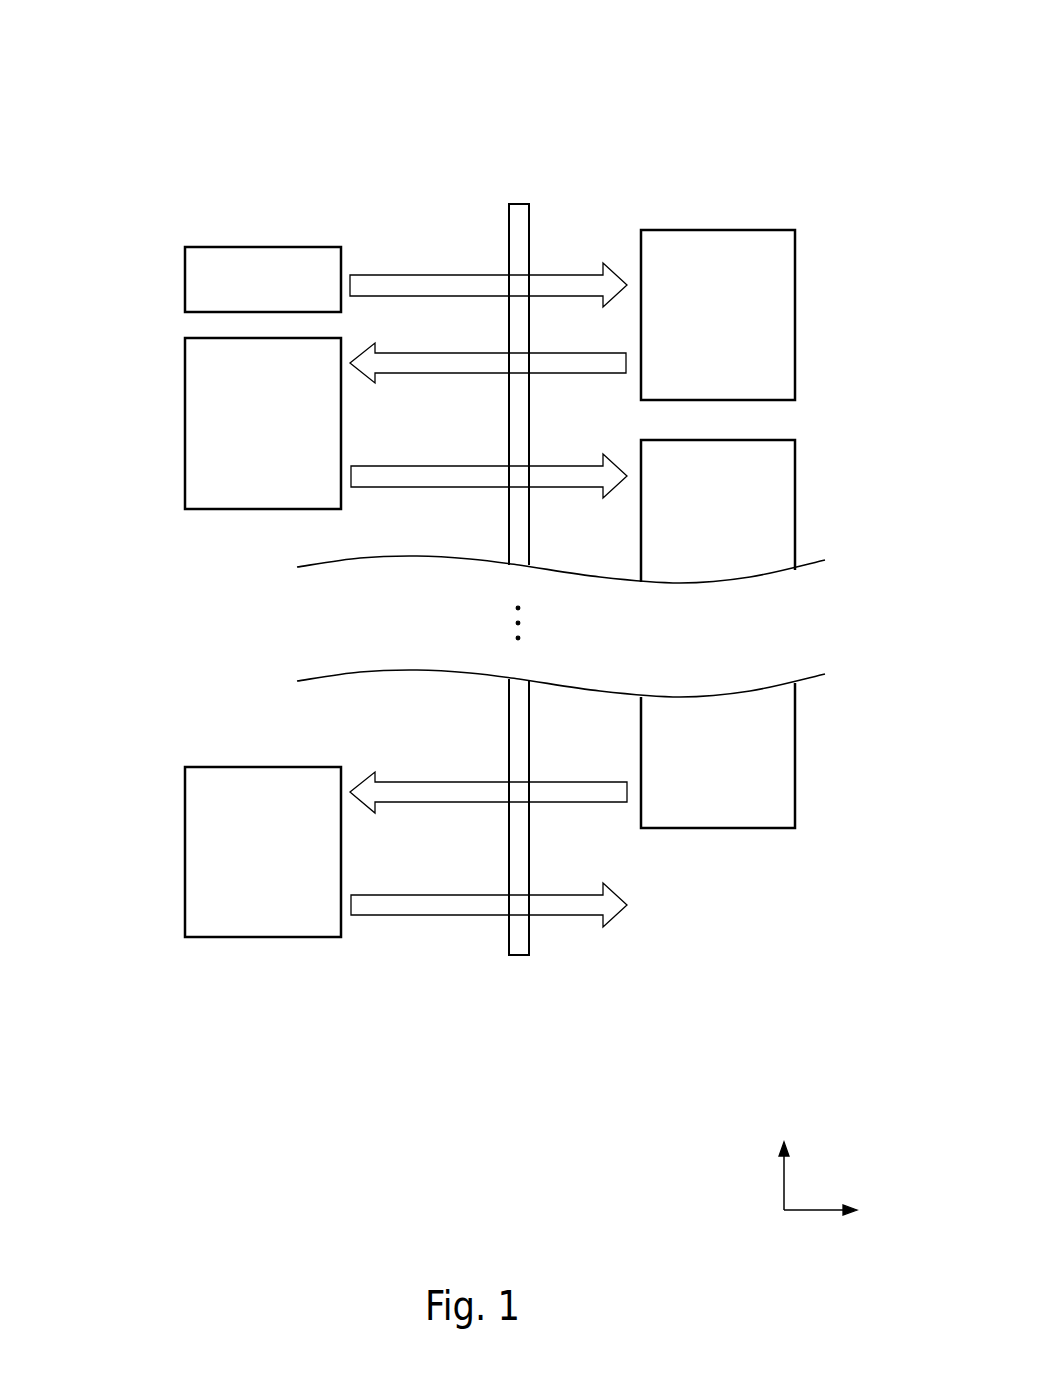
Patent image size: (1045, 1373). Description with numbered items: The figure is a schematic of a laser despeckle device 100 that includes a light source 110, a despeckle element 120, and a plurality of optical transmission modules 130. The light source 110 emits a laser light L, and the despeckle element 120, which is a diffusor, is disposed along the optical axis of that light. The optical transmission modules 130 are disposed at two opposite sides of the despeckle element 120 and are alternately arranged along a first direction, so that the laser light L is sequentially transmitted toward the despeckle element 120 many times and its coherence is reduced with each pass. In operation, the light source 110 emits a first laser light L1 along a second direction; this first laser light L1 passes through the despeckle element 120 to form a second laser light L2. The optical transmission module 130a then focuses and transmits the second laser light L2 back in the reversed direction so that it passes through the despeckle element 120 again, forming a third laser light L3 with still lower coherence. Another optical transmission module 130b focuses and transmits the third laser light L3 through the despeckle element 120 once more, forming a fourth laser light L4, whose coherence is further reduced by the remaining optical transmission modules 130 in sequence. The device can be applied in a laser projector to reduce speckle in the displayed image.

The laser despeckle device 100 is at (107, 41).
The light source 110 is at (190, 279).
The despeckle element 120 is at (526, 938).
The optical transmission modules 130 is at (488, 583).
The optical transmission module 130a is at (790, 311).
The optical transmission module 130b is at (190, 412).
The laser light L is at (489, 569).
The first laser light L1 is at (390, 273).
The second laser light L2 is at (573, 273).
The third laser light L3 is at (444, 351).
The fourth laser light L4 is at (562, 488).